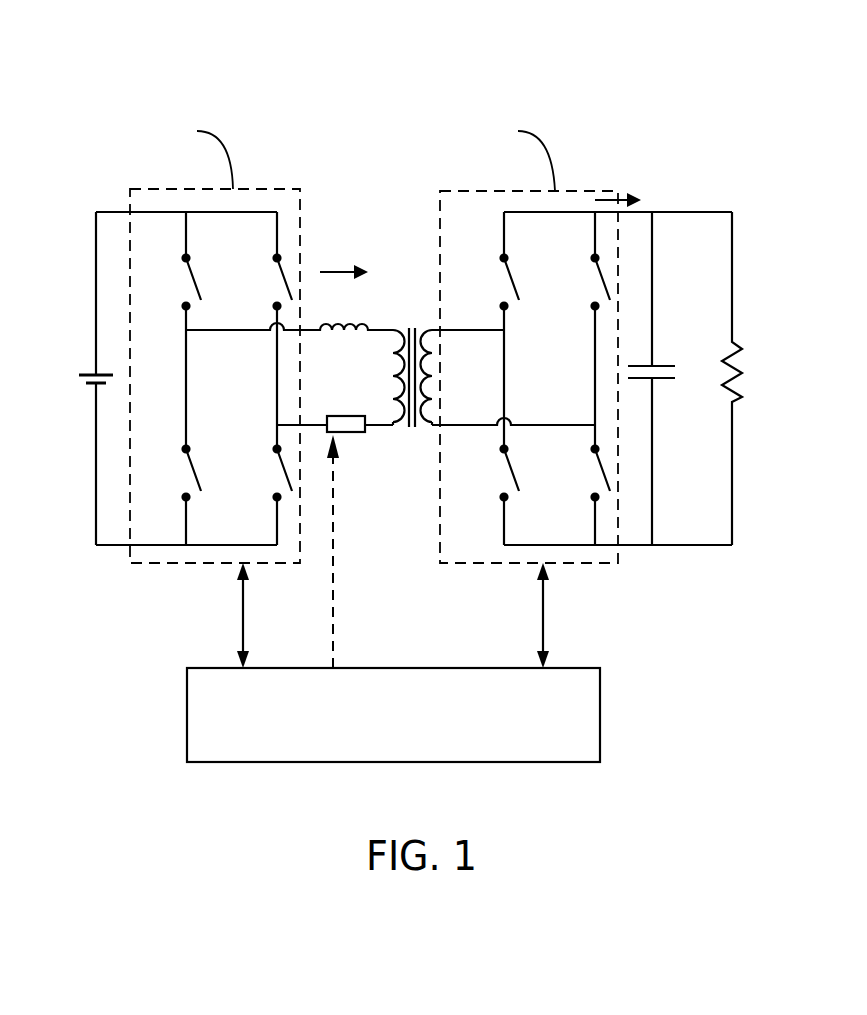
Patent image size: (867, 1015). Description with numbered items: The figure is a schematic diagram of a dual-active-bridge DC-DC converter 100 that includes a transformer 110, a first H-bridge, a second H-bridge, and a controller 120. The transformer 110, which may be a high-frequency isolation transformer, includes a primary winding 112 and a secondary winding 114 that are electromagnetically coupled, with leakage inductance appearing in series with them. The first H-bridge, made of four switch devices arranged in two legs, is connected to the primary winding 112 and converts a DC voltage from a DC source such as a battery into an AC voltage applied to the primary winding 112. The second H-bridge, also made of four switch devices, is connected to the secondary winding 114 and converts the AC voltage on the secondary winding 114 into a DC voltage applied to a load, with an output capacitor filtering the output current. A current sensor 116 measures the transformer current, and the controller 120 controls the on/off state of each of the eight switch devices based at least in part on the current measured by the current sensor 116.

The DAB DC-DC converter 100 is at (378, 85).
The transformer 110 is at (399, 300).
The primary winding 112 is at (392, 396).
The secondary winding 114 is at (440, 394).
The current sensor 116 is at (343, 436).
The controller 120 is at (393, 598).